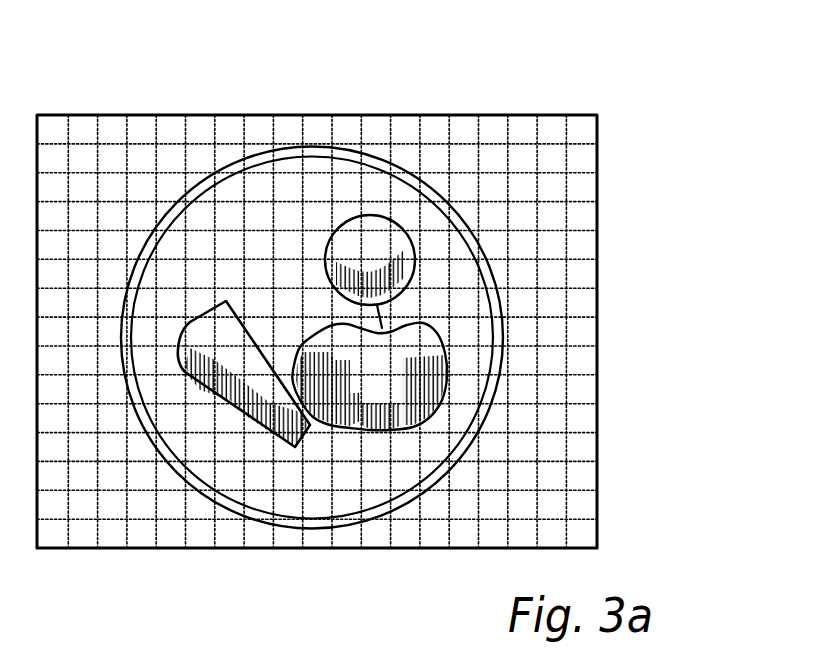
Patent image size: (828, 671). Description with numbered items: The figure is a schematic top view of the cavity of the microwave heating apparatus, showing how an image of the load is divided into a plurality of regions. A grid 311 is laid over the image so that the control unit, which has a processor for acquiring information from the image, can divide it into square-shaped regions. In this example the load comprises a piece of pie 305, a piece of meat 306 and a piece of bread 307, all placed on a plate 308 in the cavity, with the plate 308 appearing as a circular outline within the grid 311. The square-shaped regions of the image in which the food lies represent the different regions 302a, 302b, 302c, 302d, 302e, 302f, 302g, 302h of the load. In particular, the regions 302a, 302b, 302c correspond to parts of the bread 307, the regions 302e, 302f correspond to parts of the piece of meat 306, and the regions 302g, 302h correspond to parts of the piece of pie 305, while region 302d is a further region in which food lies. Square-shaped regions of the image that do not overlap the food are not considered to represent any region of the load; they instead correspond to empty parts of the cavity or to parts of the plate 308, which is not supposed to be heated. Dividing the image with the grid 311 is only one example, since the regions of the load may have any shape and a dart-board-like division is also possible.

The grid 311 is at (70, 133).
The plate 308 is at (500, 273).
The piece of bread 307 is at (356, 208).
The region of the load 302a is at (347, 247).
The region of the load 302b is at (372, 245).
The region of the load 302c is at (407, 250).
The region of the load 302d is at (380, 362).
The region of the load 302e is at (407, 360).
The region of the load 302f is at (372, 413).
The region of the load 302g is at (228, 362).
The region of the load 302h is at (255, 383).
The piece of meat 306 is at (455, 388).
The piece of pie 305 is at (208, 407).